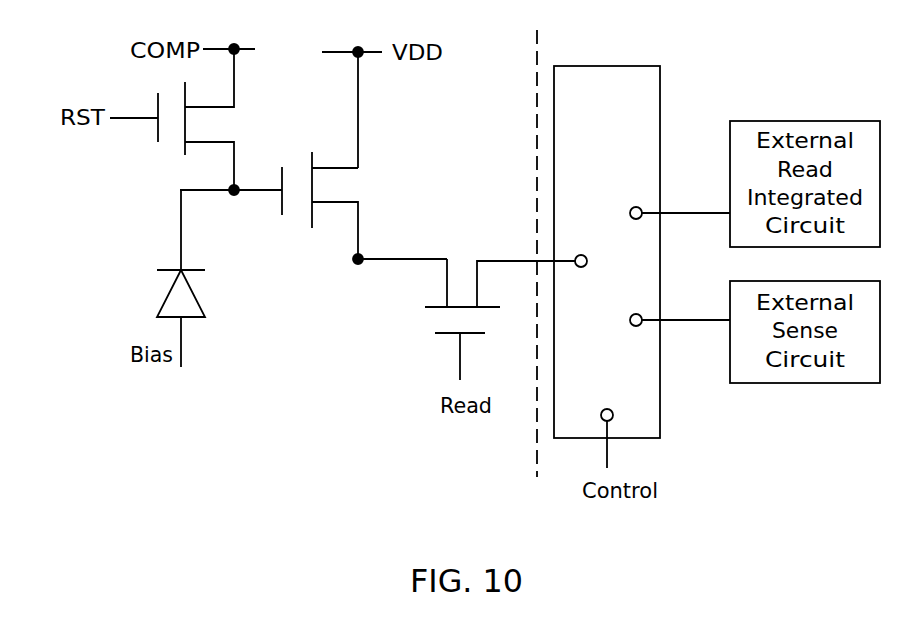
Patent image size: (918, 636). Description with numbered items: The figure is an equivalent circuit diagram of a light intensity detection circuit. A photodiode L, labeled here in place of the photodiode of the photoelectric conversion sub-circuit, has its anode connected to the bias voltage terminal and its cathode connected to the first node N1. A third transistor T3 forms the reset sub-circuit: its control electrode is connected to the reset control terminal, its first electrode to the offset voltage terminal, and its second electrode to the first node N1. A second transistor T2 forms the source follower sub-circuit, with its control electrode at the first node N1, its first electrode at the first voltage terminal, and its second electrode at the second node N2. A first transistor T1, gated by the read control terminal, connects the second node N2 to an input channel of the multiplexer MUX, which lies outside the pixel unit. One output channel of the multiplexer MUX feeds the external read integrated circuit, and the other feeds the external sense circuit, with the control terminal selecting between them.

The first transistor T1 is at (500, 305).
The second transistor T2 is at (339, 205).
The third transistor T3 is at (215, 136).
The photodiode L is at (196, 278).
The first node N1 is at (231, 206).
The second node N2 is at (380, 259).
The multiplexer MUX is at (642, 250).